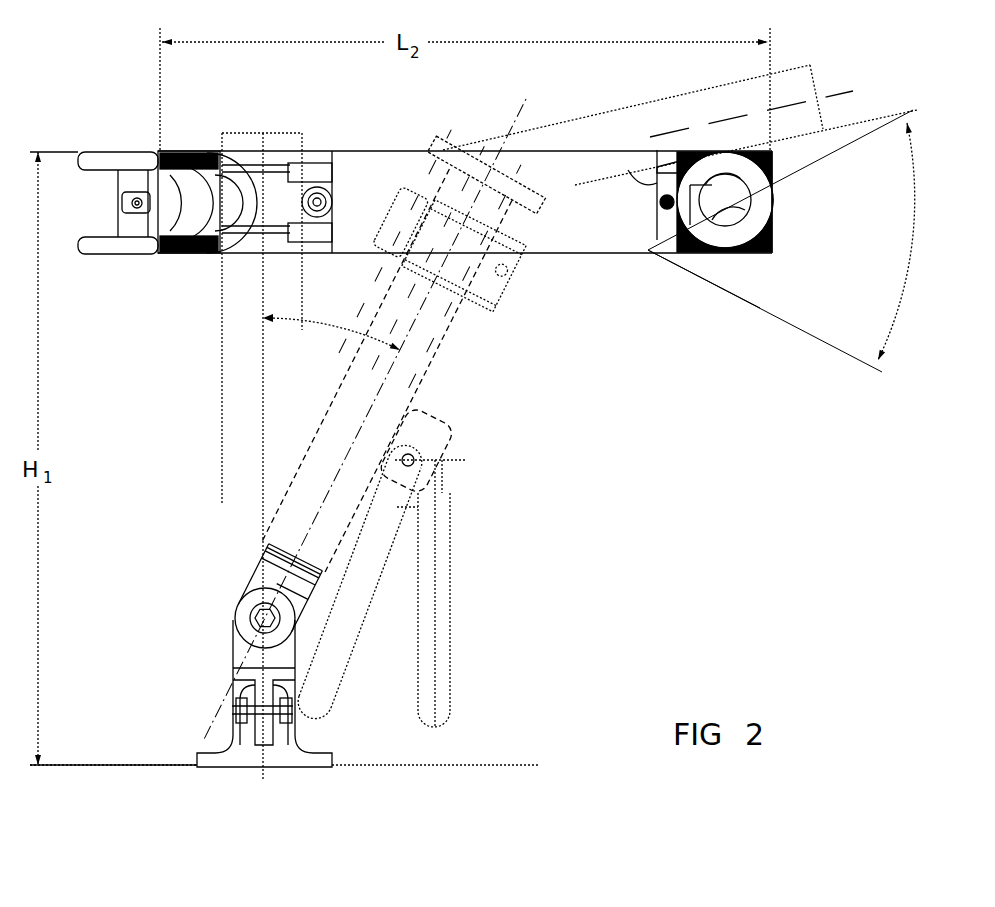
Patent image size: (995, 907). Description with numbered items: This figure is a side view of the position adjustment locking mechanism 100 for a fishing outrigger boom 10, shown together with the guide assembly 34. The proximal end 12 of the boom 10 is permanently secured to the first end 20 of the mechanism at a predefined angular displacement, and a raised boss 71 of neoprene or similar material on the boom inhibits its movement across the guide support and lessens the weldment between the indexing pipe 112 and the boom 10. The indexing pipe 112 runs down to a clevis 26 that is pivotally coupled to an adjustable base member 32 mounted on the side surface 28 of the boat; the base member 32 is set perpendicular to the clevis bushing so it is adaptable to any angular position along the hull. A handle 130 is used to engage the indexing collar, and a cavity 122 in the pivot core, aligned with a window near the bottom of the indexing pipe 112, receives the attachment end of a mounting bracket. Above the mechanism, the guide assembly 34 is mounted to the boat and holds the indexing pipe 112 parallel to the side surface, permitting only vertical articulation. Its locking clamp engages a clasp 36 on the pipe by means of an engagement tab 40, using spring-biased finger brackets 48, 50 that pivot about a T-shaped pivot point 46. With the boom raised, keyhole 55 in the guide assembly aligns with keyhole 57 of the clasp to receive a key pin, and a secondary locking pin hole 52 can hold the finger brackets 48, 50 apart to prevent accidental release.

The outrigger boom 10 is at (793, 68).
The proximal end 12 is at (540, 193).
The first end 20 is at (520, 205).
The clevis 26 is at (253, 583).
The side surface 28 is at (470, 763).
The adjustable base member 32 is at (197, 755).
The guide assembly 34 is at (633, 253).
The clasp 36 is at (500, 310).
The engagement tab 40 is at (410, 183).
The pivot point 46 is at (153, 255).
The finger bracket 48 is at (123, 255).
The finger bracket 50 is at (100, 150).
The secondary locking pin hole 52 is at (133, 210).
The keyhole 55 is at (320, 188).
The keyhole 57 is at (506, 276).
The raised boss 71 is at (670, 168).
The position adjustment locking mechanism 100 is at (507, 520).
The indexing pipe 112 is at (427, 390).
The cavity 122 is at (276, 521).
The handle 130 is at (448, 633).